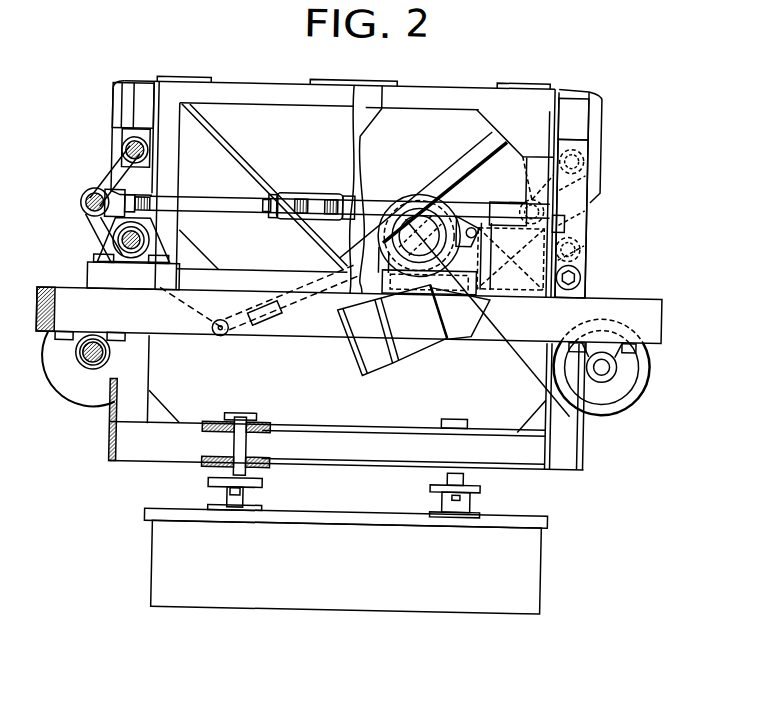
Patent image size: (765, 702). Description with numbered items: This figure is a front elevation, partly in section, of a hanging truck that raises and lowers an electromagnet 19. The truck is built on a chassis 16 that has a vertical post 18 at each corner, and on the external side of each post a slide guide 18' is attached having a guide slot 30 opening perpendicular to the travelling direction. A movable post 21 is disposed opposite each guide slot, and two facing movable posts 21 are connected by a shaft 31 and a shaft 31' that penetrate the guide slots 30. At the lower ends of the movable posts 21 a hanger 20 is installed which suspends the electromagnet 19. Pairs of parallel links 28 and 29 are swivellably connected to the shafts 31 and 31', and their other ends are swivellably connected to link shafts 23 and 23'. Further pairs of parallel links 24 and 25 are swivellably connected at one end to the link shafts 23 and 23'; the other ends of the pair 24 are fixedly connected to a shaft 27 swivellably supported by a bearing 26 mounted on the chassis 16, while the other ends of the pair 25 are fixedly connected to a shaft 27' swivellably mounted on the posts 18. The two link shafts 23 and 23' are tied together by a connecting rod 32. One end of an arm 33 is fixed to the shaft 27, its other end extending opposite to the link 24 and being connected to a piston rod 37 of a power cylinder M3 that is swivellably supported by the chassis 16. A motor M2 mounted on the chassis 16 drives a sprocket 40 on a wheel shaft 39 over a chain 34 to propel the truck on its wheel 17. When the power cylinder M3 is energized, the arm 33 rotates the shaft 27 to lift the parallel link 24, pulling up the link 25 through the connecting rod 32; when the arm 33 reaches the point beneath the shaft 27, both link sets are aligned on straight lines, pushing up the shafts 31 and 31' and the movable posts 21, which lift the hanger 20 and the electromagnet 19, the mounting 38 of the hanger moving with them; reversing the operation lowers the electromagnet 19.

The chassis 16 is at (55, 315).
The wheel 17 is at (67, 376).
The post 18 is at (340, 164).
The slide guide 18' is at (346, 163).
The electromagnet 19 is at (532, 550).
The hanger 20 is at (309, 434).
The movable post 21 is at (137, 360).
The link shaft 23 is at (75, 193).
The link shaft 23' is at (515, 223).
The parallel link 24 is at (104, 221).
The parallel link 25 is at (587, 209).
The bearing 26 is at (106, 244).
The shaft 27 is at (166, 232).
The shaft 27' is at (601, 244).
The parallel link 28 is at (113, 169).
The parallel link 29 is at (586, 174).
The guide slot 30 is at (135, 108).
The shaft 31 is at (109, 142).
The shaft 31' is at (608, 154).
The connecting rod 32 is at (236, 210).
The arm 33 is at (200, 299).
The chain 34 is at (508, 335).
The piston rod 37 is at (258, 331).
The clamp 38 is at (235, 461).
The wheel shaft 39 is at (605, 358).
The sprocket 40 is at (645, 358).
The motor M2 is at (416, 190).
The power cylinder M3 is at (331, 284).